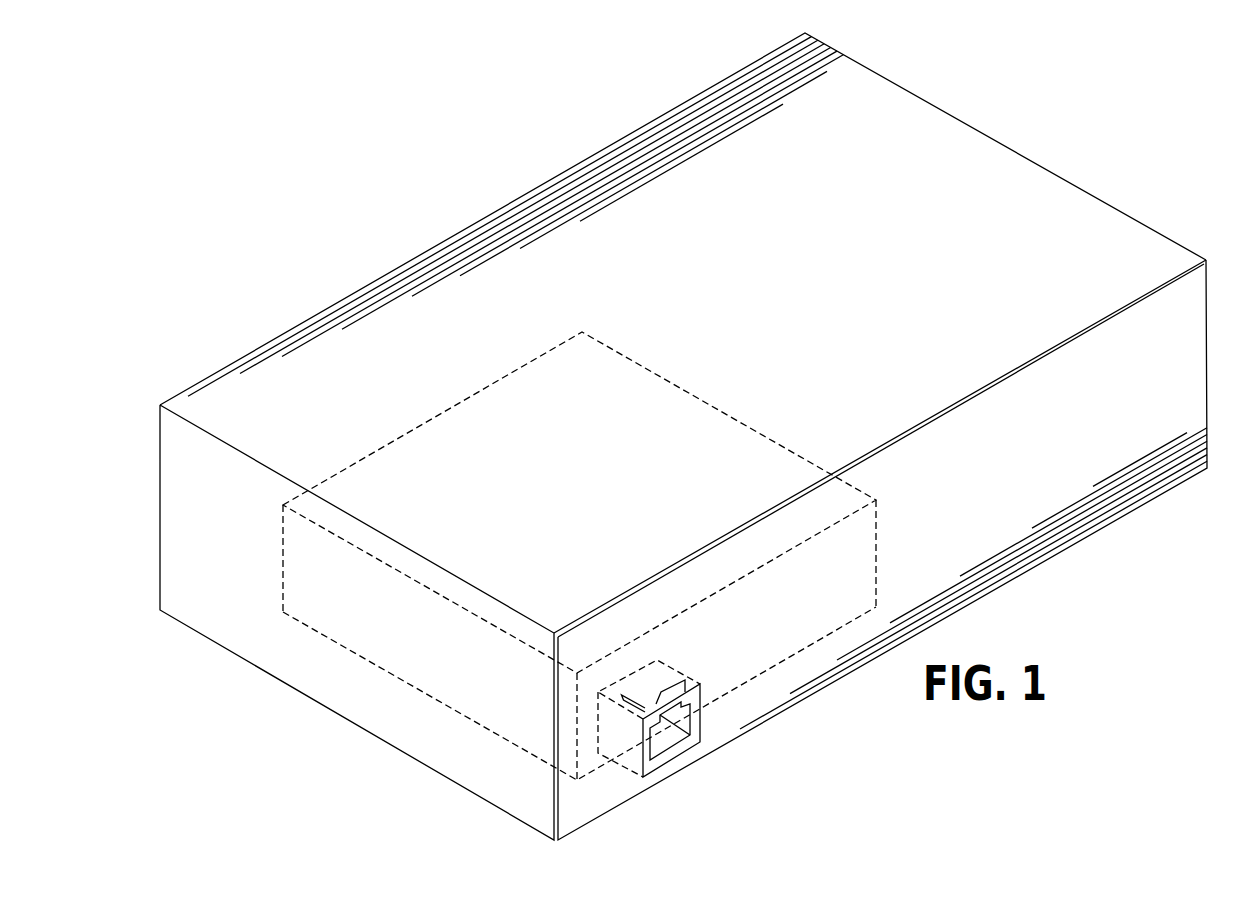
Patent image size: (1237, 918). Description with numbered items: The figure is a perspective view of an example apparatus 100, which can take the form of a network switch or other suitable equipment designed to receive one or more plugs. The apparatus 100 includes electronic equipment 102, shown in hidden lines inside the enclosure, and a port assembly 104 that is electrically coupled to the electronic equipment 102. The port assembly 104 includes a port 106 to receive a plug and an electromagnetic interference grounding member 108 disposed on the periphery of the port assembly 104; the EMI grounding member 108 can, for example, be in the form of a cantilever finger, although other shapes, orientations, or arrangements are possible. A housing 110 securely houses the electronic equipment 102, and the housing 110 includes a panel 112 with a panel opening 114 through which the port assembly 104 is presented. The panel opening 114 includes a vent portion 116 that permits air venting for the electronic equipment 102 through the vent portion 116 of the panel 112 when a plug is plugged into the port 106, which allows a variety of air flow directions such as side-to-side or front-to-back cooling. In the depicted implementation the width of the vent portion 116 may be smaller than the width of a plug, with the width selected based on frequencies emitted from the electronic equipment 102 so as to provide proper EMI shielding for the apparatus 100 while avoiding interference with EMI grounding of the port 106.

The apparatus 100 is at (468, 182).
The electronic equipment 102 is at (730, 415).
The port assembly 104 is at (684, 766).
The port 106 is at (657, 752).
The EMI grounding member 108 is at (637, 698).
The housing 110 is at (1003, 145).
The panel 112 is at (877, 447).
The panel opening 114 is at (702, 723).
The vent portion 116 is at (678, 685).